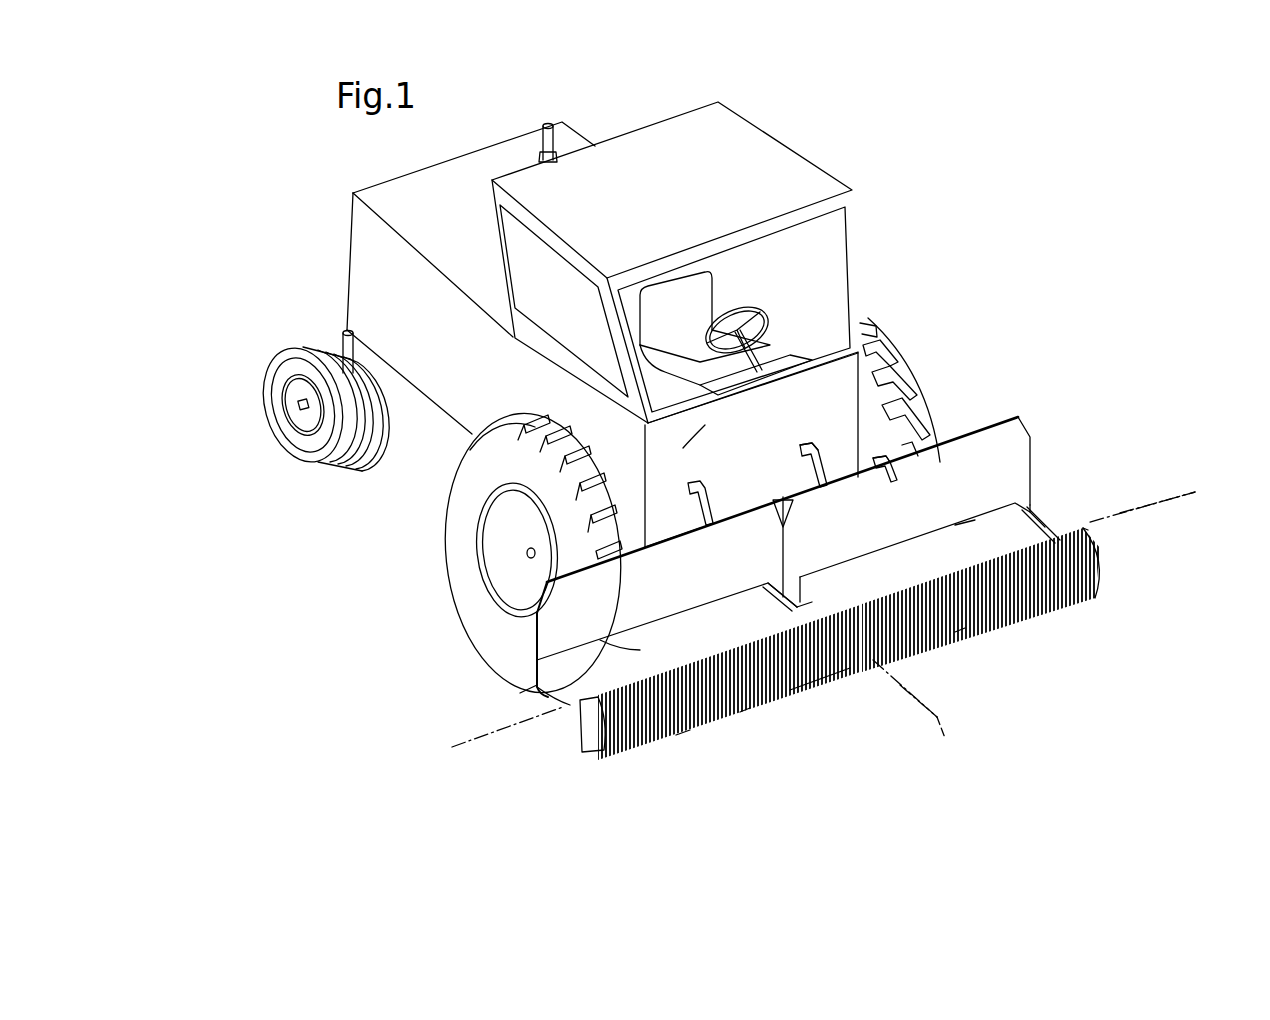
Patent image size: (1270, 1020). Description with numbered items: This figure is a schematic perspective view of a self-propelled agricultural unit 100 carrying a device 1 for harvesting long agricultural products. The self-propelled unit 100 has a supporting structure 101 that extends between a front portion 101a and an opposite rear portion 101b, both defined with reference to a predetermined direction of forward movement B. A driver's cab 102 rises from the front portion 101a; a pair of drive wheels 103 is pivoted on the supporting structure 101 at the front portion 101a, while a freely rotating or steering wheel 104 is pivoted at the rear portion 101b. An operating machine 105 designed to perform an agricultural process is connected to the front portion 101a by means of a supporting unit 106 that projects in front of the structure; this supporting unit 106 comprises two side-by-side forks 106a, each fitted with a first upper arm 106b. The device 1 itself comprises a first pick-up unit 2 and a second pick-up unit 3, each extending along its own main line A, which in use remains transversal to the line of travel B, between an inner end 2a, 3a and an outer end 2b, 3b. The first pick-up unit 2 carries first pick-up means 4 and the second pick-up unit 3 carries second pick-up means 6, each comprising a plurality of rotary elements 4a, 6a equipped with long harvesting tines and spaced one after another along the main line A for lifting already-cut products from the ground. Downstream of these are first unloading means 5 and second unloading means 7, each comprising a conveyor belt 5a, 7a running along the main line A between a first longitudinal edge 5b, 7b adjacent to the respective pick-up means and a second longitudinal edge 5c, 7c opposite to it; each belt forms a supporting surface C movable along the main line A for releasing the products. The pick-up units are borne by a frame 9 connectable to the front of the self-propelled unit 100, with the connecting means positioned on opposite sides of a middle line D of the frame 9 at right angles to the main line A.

The device for harvesting long agricultural products 1 is at (442, 775).
The first pick-up unit 2 is at (717, 740).
The inner end 2a is at (777, 597).
The outer end 2b is at (573, 705).
The second pick-up unit 3 is at (1022, 631).
The inner end 3a is at (800, 600).
The outer end 3b is at (1035, 515).
The first pick-up means 4 is at (797, 713).
The rotary elements 4a is at (682, 730).
The first unloading means 5 is at (633, 660).
The conveyor belt 5a is at (760, 630).
The first longitudinal edge 5b is at (596, 693).
The second longitudinal edge 5c is at (605, 640).
The second pick-up means 6 is at (1050, 622).
The rotary elements 6a is at (1082, 594).
The second unloading means 7 is at (995, 528).
The conveyor belt 7a is at (893, 580).
The first longitudinal edge 7b is at (1040, 527).
The second longitudinal edge 7c is at (965, 525).
The frame 9 is at (783, 495).
The self-propelled unit 100 is at (962, 188).
The supporting structure 101 is at (423, 410).
The front portion 101a is at (683, 448).
The rear portion 101b is at (347, 253).
The driver's cab 102 is at (797, 252).
The drive wheels 103 is at (453, 556).
The wheel 104 is at (278, 345).
The operating machine 105 is at (1116, 545).
The supporting unit 106 is at (820, 424).
The forks 106a is at (834, 446).
The first upper arm 106b is at (875, 465).
The main line A is at (1190, 490).
The direction of forward movement B is at (940, 730).
The supporting surface C is at (747, 713).
The middle line D is at (945, 738).